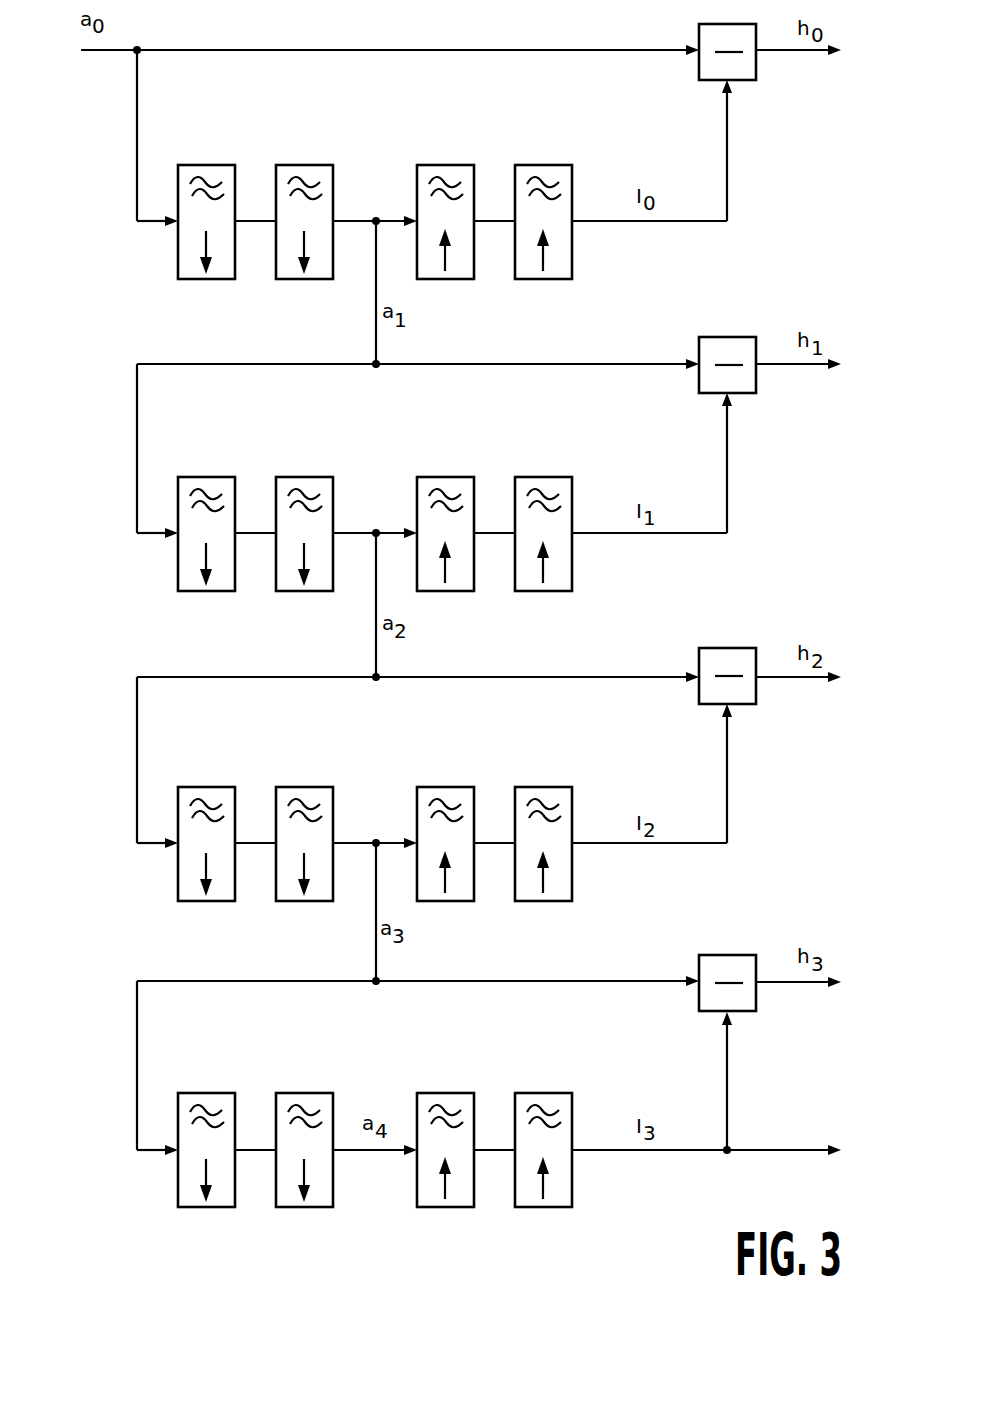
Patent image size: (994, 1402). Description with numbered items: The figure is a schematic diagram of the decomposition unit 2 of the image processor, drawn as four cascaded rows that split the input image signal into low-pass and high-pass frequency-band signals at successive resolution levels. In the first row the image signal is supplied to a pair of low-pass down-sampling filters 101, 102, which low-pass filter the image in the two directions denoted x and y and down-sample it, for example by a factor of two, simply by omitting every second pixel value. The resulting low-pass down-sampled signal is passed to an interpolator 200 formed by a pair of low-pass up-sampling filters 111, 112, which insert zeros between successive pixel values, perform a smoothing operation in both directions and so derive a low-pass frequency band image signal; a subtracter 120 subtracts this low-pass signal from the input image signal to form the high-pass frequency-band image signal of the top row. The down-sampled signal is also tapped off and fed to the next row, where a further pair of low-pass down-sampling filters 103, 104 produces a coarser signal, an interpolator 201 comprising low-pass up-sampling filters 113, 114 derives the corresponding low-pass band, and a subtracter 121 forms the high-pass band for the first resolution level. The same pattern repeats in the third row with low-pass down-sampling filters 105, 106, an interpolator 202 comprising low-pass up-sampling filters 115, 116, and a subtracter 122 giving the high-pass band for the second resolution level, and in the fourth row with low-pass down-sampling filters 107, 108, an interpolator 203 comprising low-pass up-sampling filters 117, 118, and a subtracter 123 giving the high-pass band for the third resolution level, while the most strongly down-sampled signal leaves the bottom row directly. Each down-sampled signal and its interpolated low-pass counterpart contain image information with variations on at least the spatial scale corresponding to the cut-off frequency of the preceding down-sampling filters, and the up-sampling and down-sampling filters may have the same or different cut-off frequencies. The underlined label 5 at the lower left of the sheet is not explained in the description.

The decomposition unit 2 is at (103, 131).
The filter bank 5 is at (100, 1202).
The low-pass down-sampling filter 101 is at (206, 190).
The low-pass down-sampling filter 102 is at (304, 190).
The low-pass down-sampling filter 103 is at (206, 502).
The low-pass down-sampling filter 104 is at (304, 502).
The low-pass down-sampling filter 105 is at (206, 812).
The low-pass down-sampling filter 106 is at (304, 812).
The low-pass down-sampling filter 107 is at (206, 1118).
The low-pass down-sampling filter 108 is at (304, 1118).
The low-pass up-sampling filter 111 is at (445, 190).
The low-pass up-sampling filter 112 is at (543, 190).
The low-pass up-sampling filter 113 is at (445, 502).
The low-pass up-sampling filter 114 is at (543, 502).
The low-pass up-sampling filter 115 is at (445, 812).
The low-pass up-sampling filter 116 is at (543, 812).
The low-pass up-sampling filter 117 is at (445, 1118).
The low-pass up-sampling filter 118 is at (543, 1118).
The subtracter 120 is at (770, 84).
The subtracter 121 is at (770, 397).
The subtracter 122 is at (770, 708).
The subtracter 123 is at (770, 1017).
The interpolator 200 is at (490, 343).
The interpolator 201 is at (490, 655).
The interpolator 202 is at (490, 961).
The interpolator 203 is at (490, 1266).